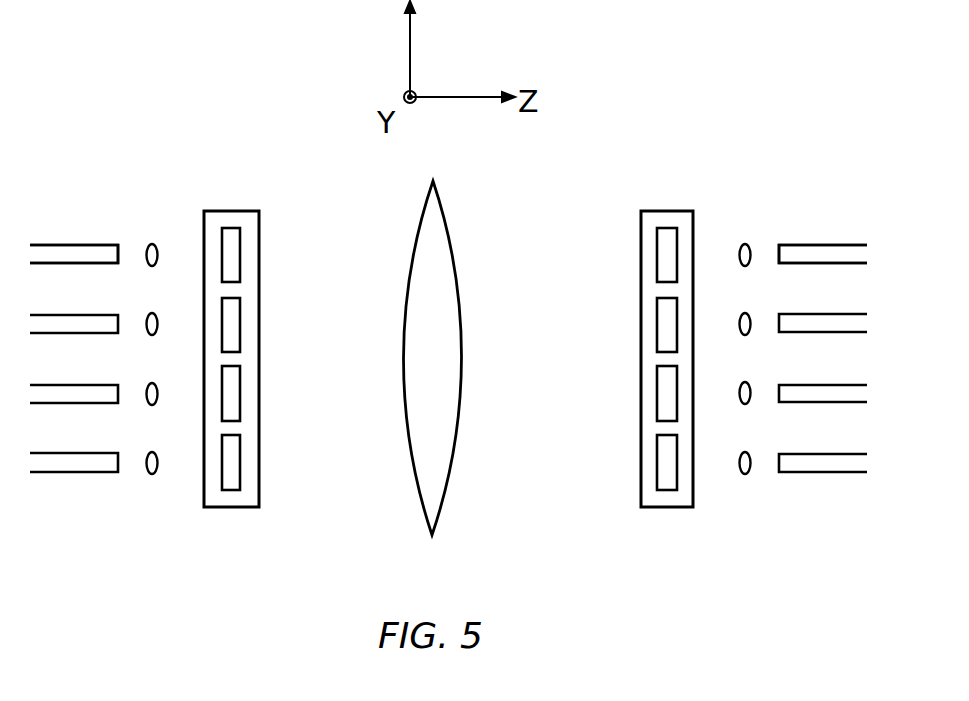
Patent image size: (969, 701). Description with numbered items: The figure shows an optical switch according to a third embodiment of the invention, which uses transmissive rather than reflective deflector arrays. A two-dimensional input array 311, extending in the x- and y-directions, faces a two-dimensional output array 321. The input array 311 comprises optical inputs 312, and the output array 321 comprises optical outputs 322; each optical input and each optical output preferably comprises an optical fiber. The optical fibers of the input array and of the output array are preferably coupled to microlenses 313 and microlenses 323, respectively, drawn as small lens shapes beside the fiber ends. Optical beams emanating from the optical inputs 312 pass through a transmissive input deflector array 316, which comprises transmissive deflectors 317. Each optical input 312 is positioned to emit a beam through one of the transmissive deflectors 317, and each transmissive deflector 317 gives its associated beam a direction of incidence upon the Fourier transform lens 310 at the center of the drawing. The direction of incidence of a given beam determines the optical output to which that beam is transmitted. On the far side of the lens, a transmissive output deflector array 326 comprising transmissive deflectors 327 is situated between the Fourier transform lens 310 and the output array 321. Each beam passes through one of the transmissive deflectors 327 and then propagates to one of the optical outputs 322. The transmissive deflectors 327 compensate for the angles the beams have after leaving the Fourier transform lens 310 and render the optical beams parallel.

The Fourier transform lens 310 is at (448, 487).
The input array 311 is at (59, 510).
The optical inputs 312 is at (85, 315).
The microlenses 313 is at (152, 318).
The transmissive input deflector array 316 is at (236, 211).
The transmissive deflectors 317 is at (240, 255).
The output array 321 is at (820, 522).
The optical outputs 322 is at (827, 314).
The microlenses 323 is at (742, 322).
The transmissive output deflector array 326 is at (658, 211).
The transmissive deflectors 327 is at (657, 255).